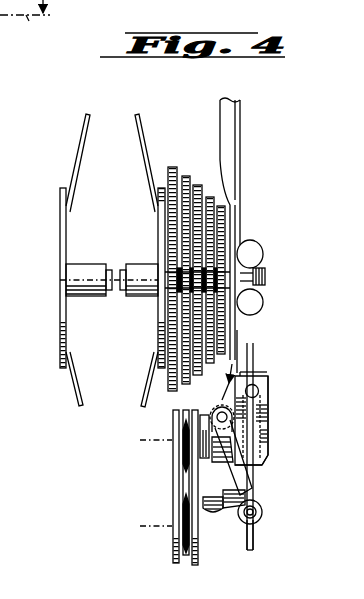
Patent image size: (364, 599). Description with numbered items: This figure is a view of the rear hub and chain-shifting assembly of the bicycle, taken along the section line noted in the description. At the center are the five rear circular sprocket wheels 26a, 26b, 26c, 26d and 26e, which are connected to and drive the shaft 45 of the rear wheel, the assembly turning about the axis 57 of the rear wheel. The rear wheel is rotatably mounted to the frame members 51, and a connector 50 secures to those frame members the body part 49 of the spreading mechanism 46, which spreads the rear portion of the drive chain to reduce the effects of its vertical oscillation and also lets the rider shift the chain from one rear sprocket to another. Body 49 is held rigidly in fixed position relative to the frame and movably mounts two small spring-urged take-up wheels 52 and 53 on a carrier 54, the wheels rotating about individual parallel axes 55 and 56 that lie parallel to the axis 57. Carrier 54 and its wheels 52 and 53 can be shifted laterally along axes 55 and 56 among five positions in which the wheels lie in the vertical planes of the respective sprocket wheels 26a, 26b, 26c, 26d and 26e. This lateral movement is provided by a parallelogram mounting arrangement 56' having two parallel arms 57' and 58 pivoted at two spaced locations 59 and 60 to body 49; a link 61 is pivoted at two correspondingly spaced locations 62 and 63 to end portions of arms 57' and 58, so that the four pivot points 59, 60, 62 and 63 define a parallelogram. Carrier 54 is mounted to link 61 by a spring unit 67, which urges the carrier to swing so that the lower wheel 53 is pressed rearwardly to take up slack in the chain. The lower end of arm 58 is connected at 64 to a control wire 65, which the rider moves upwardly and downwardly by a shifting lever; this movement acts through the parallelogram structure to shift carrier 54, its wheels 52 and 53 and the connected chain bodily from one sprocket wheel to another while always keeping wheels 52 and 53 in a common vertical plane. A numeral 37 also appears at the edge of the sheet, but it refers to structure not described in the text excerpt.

The axis fragment 37 is at (30, 26).
The shaft of rear wheel 45 is at (85, 268).
The axis of rear wheel 57 is at (87, 266).
The rear circular sprocket wheel 26a is at (258, 280).
The rear circular sprocket wheel 26b is at (253, 280).
The rear circular sprocket wheel 26c is at (246, 275).
The rear circular sprocket wheel 26d is at (241, 269).
The rear circular sprocket wheel 26e is at (234, 261).
The frame members 51 is at (242, 110).
The connector 50 is at (237, 318).
The parallelogram mounting arrangement 56' is at (272, 440).
The control wire 65 is at (254, 548).
The spreading mechanism 46 is at (271, 438).
The body part 49 is at (265, 384).
The pivot location 62 is at (270, 402).
The pivot location 59 is at (270, 449).
The arm 57' is at (294, 468).
The pivot location 60 is at (256, 488).
The link 61 is at (218, 382).
The pivot location 63 is at (222, 412).
The spring unit 67 is at (220, 470).
The arm 58 is at (259, 501).
The connection of arm to control wire 64 is at (257, 517).
The axis of take-up wheel 55 is at (140, 440).
The carrier 54 is at (175, 487).
The take up wheel 52 is at (183, 460).
The take up wheel 53 is at (178, 546).
The axis of take-up wheel 56 is at (153, 511).